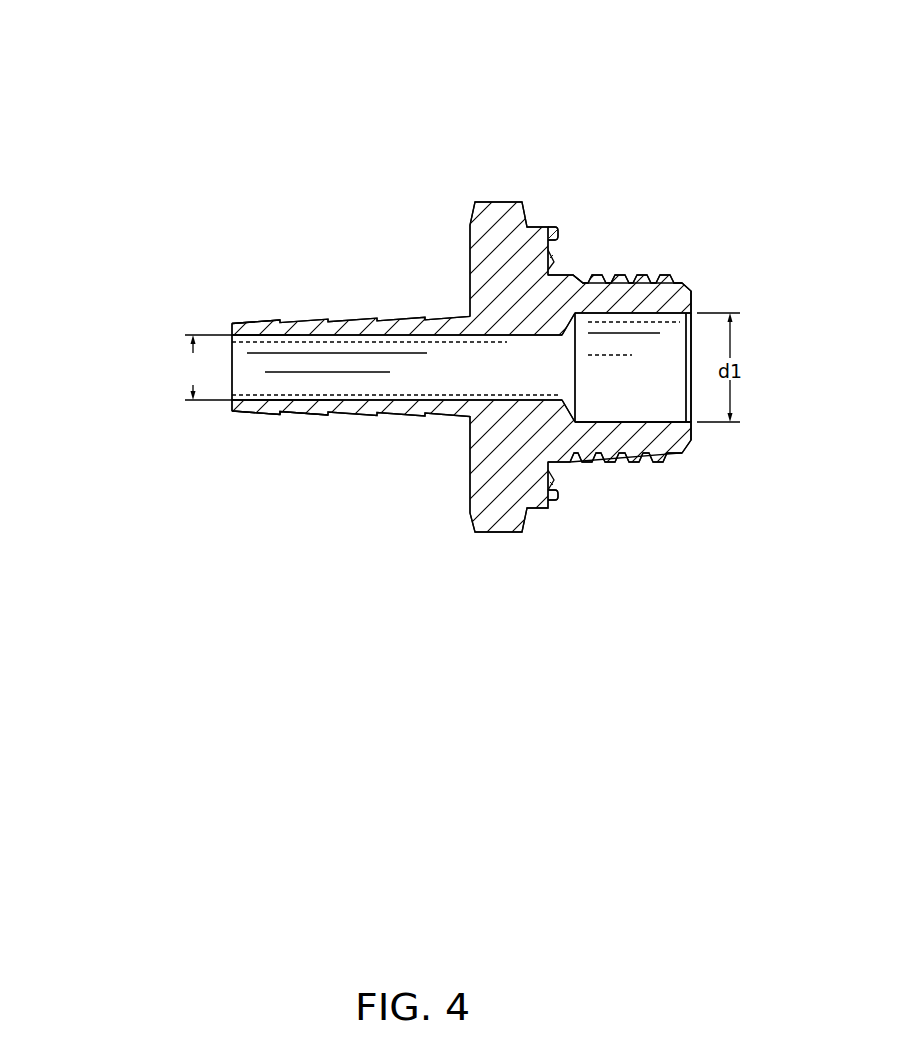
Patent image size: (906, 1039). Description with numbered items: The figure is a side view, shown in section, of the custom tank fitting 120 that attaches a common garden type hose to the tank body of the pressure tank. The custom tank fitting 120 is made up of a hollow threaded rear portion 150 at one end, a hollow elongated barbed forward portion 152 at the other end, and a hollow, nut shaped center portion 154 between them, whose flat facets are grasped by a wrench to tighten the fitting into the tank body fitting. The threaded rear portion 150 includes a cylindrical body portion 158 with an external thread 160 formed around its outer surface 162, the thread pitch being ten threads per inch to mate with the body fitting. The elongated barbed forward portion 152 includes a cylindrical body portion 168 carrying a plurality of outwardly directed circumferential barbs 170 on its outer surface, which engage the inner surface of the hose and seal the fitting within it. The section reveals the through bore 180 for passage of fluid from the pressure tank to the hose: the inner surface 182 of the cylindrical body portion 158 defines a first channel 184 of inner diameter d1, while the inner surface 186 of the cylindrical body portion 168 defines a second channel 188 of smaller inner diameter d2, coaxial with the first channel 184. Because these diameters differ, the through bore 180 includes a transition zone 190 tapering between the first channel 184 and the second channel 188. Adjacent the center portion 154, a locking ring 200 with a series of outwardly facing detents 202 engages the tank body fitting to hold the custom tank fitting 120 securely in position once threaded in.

The custom tank fitting 120 is at (205, 79).
The threaded rear portion 150 is at (703, 281).
The elongated barbed forward portion 152 is at (242, 314).
The nut shaped center portion 154 is at (500, 192).
The cylindrical body portion 158 is at (682, 440).
The external thread 160 is at (643, 274).
The outer surface 162 is at (611, 464).
The cylindrical body portion 168 is at (232, 408).
The circumferential barbs 170 is at (280, 320).
The through bore 180 is at (162, 368).
The inner surface 182 is at (651, 406).
The first channel 184 is at (663, 346).
The inner surface 186 is at (296, 390).
The second channel 188 is at (252, 386).
The transition zone 190 is at (557, 400).
The locking ring 200 is at (545, 224).
The detents 202 is at (558, 226).